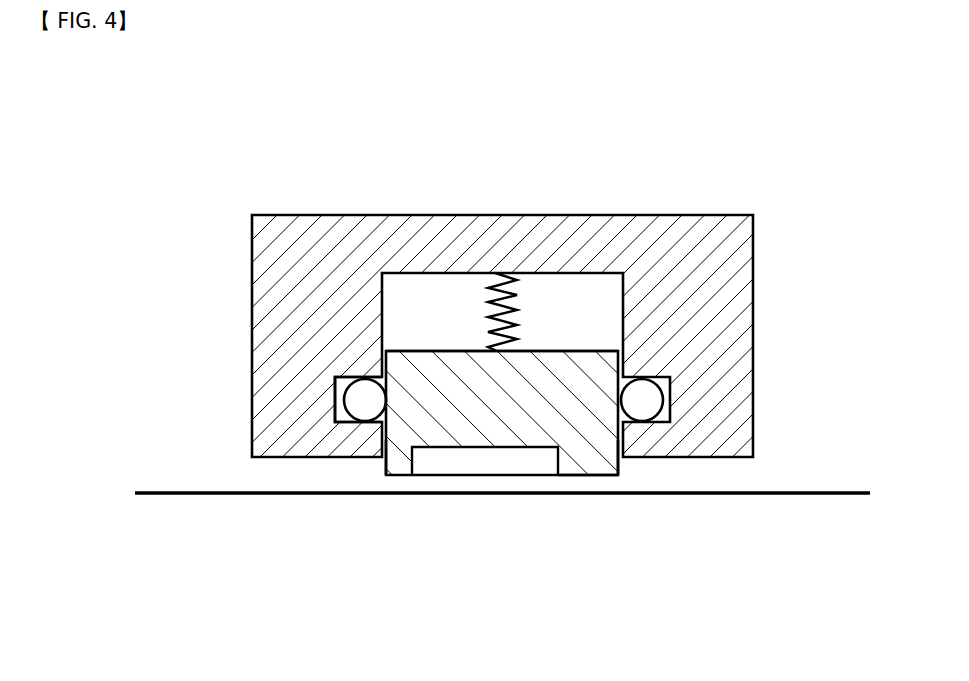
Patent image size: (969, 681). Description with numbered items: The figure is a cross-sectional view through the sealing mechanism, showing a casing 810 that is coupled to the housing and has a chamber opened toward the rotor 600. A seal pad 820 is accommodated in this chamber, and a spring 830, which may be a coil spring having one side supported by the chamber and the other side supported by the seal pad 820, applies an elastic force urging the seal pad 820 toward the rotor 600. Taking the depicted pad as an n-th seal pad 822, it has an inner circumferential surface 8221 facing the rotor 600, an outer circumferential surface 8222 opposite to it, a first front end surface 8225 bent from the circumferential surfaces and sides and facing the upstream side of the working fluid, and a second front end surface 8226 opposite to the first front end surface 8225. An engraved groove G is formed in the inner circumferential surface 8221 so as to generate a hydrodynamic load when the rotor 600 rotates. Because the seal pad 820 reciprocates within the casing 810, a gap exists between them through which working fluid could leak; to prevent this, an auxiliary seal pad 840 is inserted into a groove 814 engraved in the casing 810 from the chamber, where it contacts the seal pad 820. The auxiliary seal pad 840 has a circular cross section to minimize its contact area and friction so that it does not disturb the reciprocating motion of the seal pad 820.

The rotor 600 is at (256, 492).
The casing 810 is at (335, 228).
The groove 814 is at (334, 414).
The seal pad 820 is at (424, 291).
The n-th seal pad 822 is at (548, 378).
The inner circumferential surface 8221 is at (580, 475).
The outer circumferential surface 8222 is at (587, 347).
The first front end surface 8225 is at (384, 463).
The second front end surface 8226 is at (620, 465).
The spring 830 is at (494, 272).
The auxiliary seal pad 840 is at (357, 390).
The engraved groove G is at (474, 462).